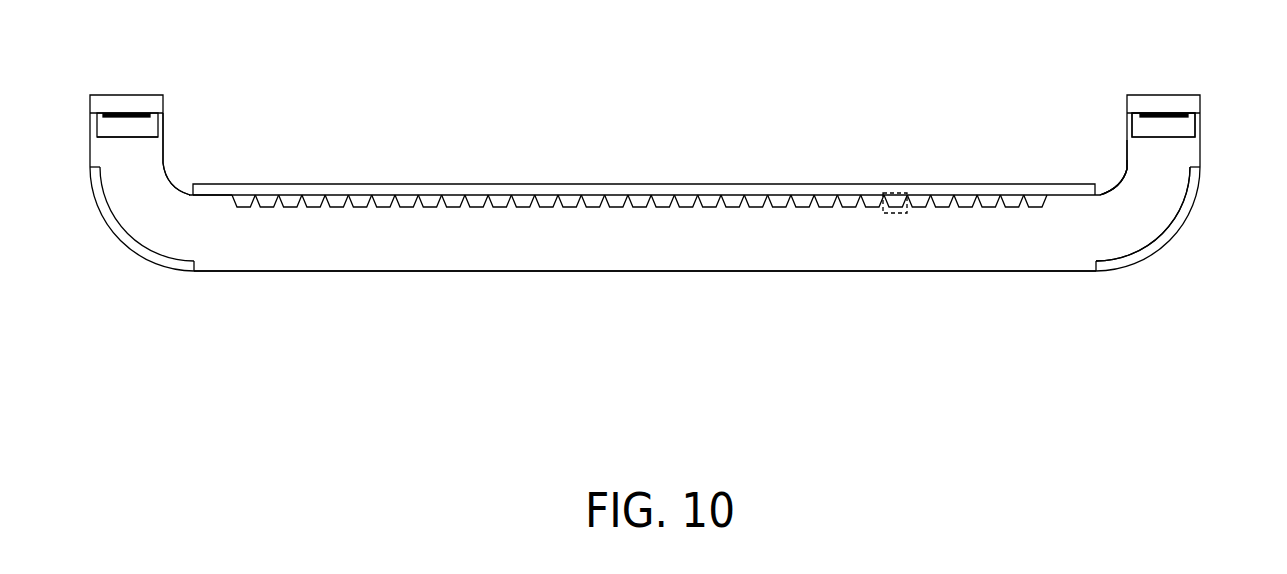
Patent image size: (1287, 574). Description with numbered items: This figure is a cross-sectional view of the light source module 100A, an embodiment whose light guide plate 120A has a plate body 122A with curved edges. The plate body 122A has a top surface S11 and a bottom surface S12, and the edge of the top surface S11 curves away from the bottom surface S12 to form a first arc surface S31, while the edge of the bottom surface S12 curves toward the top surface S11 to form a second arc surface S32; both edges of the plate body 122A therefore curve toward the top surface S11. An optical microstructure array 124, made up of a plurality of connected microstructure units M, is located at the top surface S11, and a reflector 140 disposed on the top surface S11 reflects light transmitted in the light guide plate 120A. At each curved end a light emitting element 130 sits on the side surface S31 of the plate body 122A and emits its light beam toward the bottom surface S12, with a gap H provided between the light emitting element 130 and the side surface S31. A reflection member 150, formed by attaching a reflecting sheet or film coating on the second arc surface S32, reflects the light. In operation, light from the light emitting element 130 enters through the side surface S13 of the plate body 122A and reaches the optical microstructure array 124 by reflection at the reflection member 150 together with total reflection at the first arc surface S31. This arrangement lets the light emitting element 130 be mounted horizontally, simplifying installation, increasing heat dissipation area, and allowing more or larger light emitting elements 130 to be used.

The light source module 100A is at (1208, 465).
The light guide plate 120A is at (227, 326).
The plate body 122A is at (143, 182).
The optical microstructure array 124 is at (1048, 196).
The light emitting element 130 is at (113, 102).
The reflector 140 is at (619, 189).
The reflection member 150 is at (157, 262).
The gap H is at (1188, 127).
The microstructure unit M is at (896, 192).
The top surface S11 is at (213, 190).
The bottom surface S12 is at (611, 278).
The side surface S13 is at (129, 132).
The first arc surface S31 is at (1111, 172).
The second arc surface S32 is at (1188, 212).